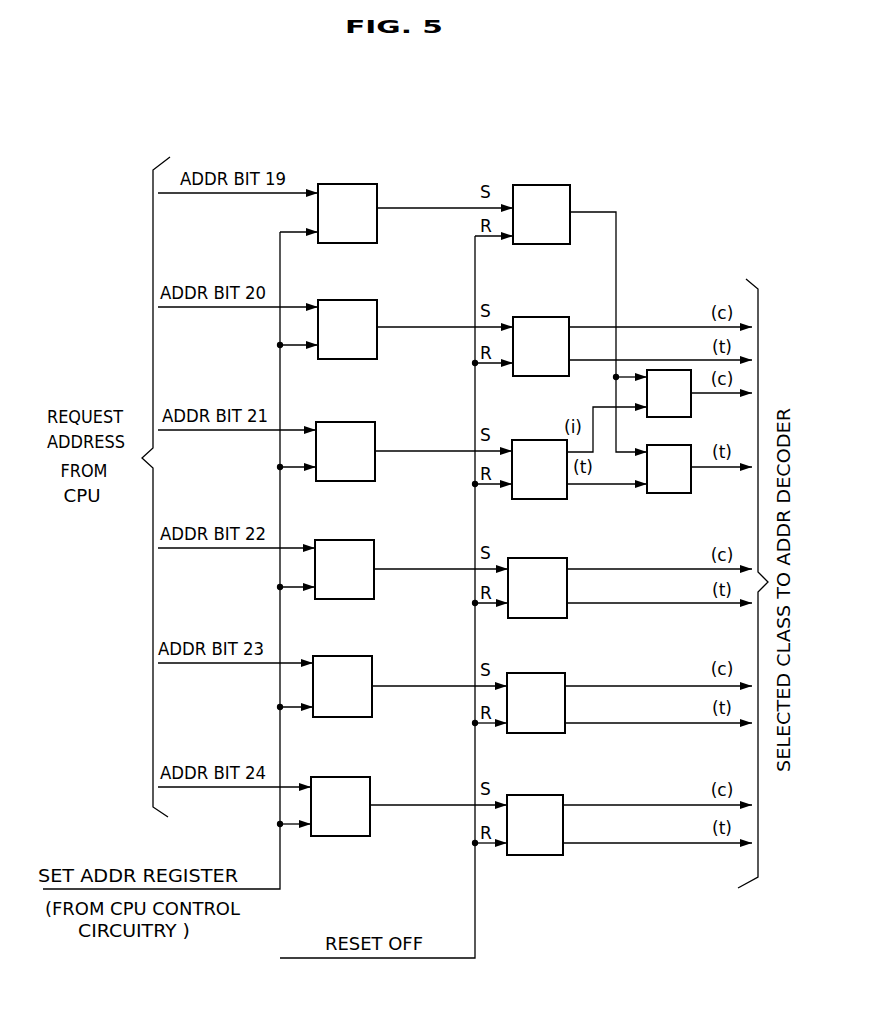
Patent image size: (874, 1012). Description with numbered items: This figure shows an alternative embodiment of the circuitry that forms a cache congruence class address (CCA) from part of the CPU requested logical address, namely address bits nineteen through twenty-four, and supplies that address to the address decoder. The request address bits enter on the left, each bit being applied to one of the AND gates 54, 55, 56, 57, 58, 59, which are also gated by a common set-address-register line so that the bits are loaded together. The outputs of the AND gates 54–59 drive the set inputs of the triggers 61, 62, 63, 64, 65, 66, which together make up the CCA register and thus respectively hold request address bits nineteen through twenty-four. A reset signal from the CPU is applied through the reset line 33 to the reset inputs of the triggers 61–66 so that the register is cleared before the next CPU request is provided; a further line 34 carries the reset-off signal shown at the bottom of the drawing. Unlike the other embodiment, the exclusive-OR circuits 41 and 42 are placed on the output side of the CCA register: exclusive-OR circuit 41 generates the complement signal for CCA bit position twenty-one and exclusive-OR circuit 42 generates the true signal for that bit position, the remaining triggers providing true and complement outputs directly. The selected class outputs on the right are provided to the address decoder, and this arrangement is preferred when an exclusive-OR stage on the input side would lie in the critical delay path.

The reset line 33 is at (278, 873).
The reset off line 34 is at (474, 918).
The exclusive-OR circuit 41 is at (691, 408).
The exclusive-OR circuit 42 is at (692, 487).
The AND gate 54 is at (373, 197).
The AND gate 55 is at (372, 315).
The AND gate 56 is at (372, 425).
The AND gate 57 is at (370, 548).
The AND gate 58 is at (368, 668).
The AND gate 59 is at (365, 790).
The trigger 61 is at (570, 198).
The trigger 62 is at (560, 322).
The trigger 63 is at (543, 443).
The trigger 64 is at (558, 562).
The trigger 65 is at (560, 675).
The trigger 66 is at (557, 800).